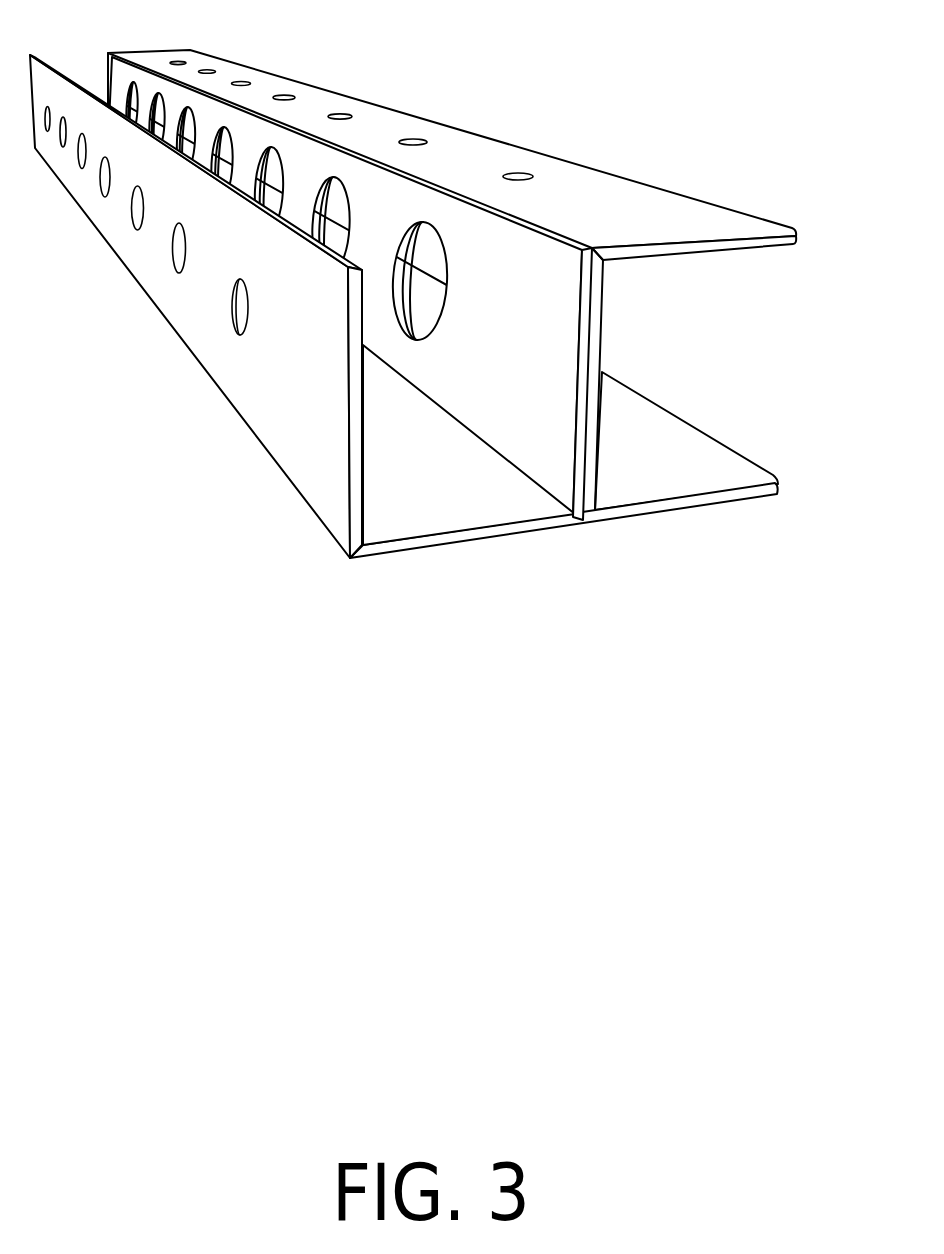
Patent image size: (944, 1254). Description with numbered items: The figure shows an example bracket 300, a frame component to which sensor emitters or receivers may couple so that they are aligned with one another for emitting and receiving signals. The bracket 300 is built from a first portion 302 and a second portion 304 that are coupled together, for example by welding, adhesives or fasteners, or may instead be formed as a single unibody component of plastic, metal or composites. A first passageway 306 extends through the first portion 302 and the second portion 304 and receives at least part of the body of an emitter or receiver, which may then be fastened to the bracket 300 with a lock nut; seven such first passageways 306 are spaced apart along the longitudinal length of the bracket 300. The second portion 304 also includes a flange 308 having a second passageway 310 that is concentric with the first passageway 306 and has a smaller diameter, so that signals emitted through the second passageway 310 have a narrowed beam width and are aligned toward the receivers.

The bracket 300 is at (447, 42).
The first portion 302 is at (806, 213).
The second portion 304 is at (332, 577).
The first passageway 306 is at (444, 229).
The flange 308 is at (268, 413).
The second passageway 310 is at (218, 336).